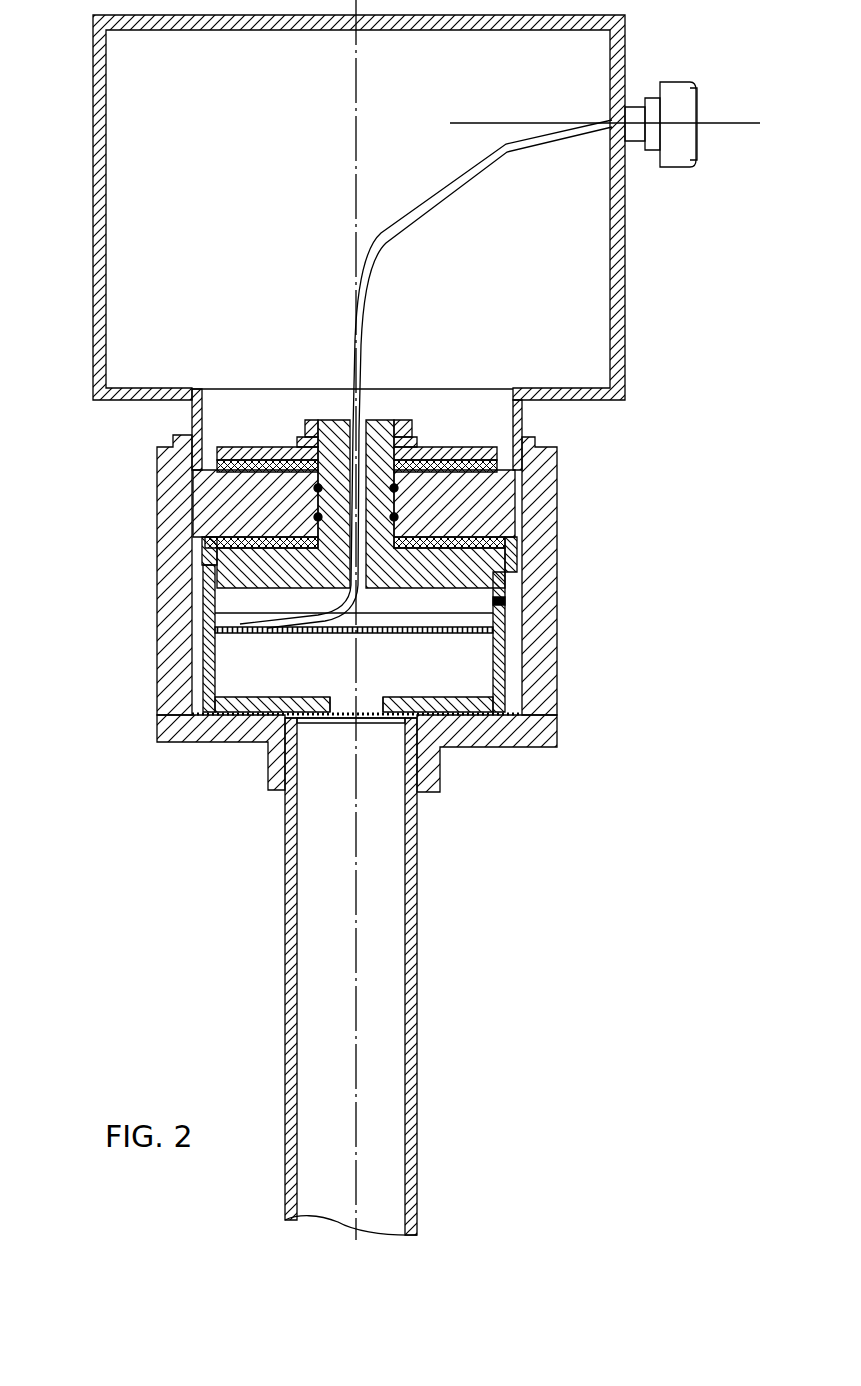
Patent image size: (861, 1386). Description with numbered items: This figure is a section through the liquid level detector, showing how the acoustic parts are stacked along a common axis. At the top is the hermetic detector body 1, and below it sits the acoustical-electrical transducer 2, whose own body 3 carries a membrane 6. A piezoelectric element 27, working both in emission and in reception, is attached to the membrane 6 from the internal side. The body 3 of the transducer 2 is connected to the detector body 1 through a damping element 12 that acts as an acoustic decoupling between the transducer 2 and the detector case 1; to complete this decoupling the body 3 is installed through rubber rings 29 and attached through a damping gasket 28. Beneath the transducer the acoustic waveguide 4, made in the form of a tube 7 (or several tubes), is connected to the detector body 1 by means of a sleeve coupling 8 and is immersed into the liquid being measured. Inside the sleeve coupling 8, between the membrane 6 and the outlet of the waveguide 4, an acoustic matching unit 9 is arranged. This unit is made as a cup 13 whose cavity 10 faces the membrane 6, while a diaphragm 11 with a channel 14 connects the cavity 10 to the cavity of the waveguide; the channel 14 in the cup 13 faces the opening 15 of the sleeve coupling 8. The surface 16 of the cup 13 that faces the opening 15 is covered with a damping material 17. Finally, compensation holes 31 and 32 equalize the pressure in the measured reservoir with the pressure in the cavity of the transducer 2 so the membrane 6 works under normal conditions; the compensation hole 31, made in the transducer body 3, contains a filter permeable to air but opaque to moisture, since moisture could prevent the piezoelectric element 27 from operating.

The detector body 1 is at (612, 262).
The acoustical-electrical transducer 2 is at (497, 612).
The body of the acoustical-electrical transducer 3 is at (503, 556).
The acoustic waveguide 4 is at (375, 1048).
The membrane 6 is at (303, 635).
The tube 7 is at (417, 1150).
The sleeve coupling 8 is at (382, 759).
The acoustic matching unit 9 is at (507, 685).
The cavity 10 is at (240, 658).
The diaphragm 11 is at (405, 697).
The damping element 12 is at (495, 535).
The cup 13 is at (490, 660).
The channel 14 is at (343, 713).
The opening of the sleeve coupling 15 is at (347, 718).
The surface of the cup 16 is at (232, 712).
The damping material 17 is at (482, 730).
The piezoelectric element 27 is at (203, 592).
The damping gasket 28 is at (432, 452).
The rubber rings 29 is at (287, 445).
The compensation hole 31 is at (507, 600).
The compensation hole 32 is at (203, 665).